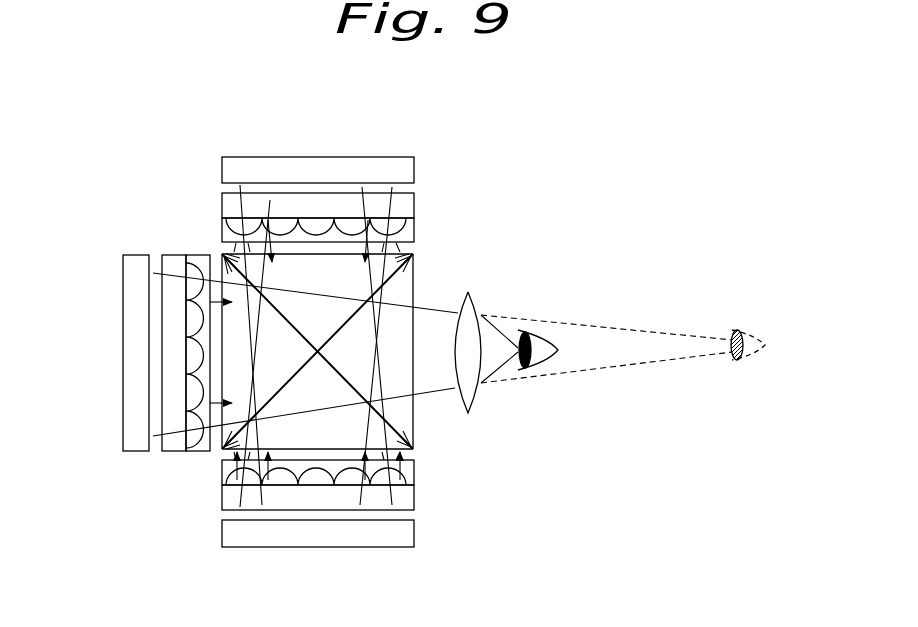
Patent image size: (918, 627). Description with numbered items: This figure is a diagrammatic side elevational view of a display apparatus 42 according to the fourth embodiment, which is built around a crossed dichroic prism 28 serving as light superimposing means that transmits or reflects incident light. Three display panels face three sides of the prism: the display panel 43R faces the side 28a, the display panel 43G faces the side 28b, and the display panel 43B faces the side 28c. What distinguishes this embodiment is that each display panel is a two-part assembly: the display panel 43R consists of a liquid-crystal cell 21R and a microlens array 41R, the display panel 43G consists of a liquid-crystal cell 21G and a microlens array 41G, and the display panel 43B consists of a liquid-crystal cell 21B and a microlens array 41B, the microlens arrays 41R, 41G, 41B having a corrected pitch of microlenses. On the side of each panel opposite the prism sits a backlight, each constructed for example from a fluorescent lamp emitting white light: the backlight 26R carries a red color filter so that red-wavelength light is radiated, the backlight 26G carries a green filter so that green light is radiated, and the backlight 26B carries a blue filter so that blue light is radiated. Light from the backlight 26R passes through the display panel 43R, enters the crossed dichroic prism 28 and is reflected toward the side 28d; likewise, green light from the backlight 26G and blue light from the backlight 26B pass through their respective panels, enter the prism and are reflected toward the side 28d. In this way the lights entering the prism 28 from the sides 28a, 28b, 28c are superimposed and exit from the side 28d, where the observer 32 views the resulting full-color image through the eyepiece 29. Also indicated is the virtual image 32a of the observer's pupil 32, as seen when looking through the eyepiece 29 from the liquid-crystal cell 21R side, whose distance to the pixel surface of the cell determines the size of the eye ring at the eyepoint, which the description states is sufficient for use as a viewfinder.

The display apparatus 42 is at (497, 115).
The backlight 26R is at (325, 172).
The liquid-crystal cell 21R is at (414, 200).
The microlens array 41R is at (414, 227).
The display panel 43R is at (397, 196).
The backlight 26G is at (135, 355).
The liquid-crystal cell 21G is at (165, 262).
The microlens array 41G is at (198, 258).
The display panel 43G is at (152, 303).
The backlight 26B is at (335, 528).
The liquid-crystal cell 21B is at (414, 500).
The microlens array 41B is at (414, 473).
The display panel 43B is at (400, 501).
The crossed dichroic prism 28 is at (321, 378).
The side of the prism 28a is at (415, 249).
The side of the prism 28b is at (222, 446).
The side of the prism 28c is at (235, 470).
The side of the prism 28d is at (413, 417).
The eyepiece 29 is at (470, 393).
The observer 32 is at (543, 336).
The virtual image of the observer's pupil 32a is at (752, 332).